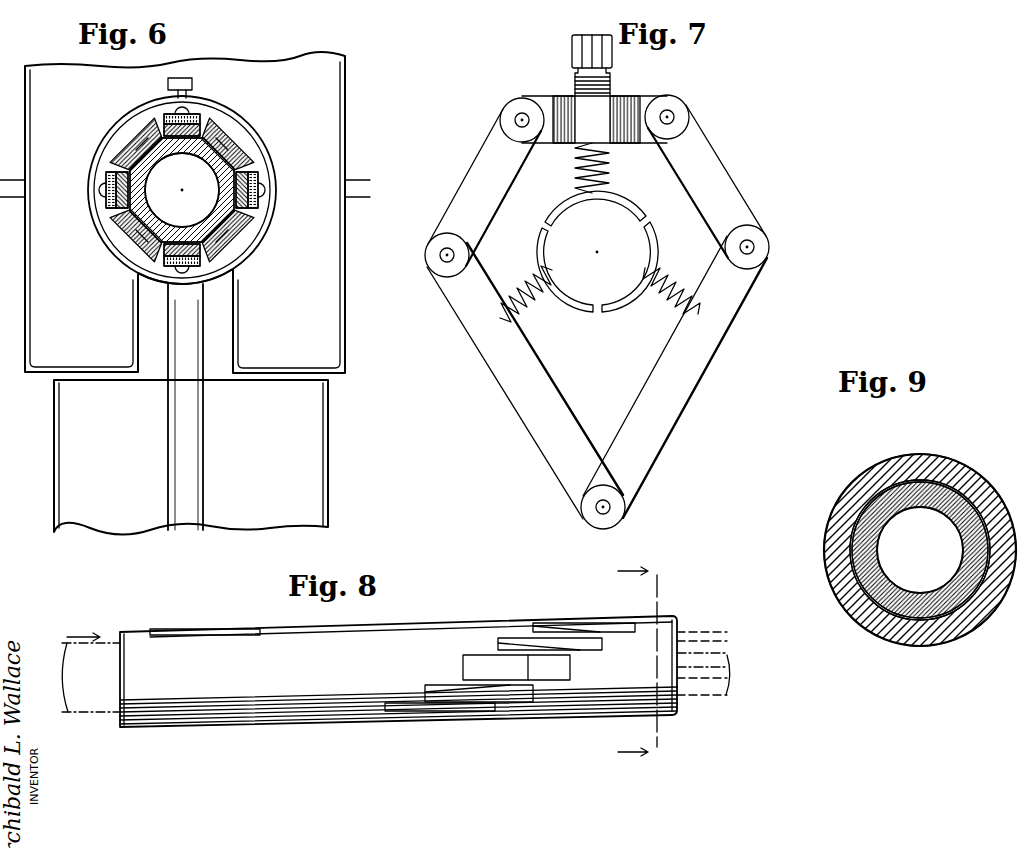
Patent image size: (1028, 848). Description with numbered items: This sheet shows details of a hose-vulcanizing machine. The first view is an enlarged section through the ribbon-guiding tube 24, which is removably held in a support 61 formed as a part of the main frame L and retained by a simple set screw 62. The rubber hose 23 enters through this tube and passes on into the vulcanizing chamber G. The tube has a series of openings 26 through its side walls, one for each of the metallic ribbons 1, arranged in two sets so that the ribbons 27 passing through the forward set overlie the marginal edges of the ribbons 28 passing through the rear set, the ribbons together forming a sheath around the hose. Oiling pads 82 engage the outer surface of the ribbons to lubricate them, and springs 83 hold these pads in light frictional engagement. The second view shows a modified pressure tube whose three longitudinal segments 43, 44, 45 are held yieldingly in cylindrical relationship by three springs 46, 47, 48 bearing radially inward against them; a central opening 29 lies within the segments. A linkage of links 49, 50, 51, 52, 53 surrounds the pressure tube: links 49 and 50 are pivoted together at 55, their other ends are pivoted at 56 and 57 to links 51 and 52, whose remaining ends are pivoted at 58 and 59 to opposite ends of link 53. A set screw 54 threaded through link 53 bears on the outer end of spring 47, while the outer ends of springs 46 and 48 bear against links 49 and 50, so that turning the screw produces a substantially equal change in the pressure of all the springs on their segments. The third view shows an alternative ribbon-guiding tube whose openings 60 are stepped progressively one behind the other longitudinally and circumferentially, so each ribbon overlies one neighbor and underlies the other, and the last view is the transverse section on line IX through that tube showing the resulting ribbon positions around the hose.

In FIG. 6, the vulcanizing chamber G is at (185, 212).
In FIG. 6, the main frame L is at (318, 396).
In FIG. 6, the ribbons 1 is at (112, 198).
In FIG. 6, the rubber hose 23 is at (160, 160).
In FIG. 6, the ribbon-guiding tube 24 is at (246, 174).
In FIG. 6, the openings 26 is at (165, 258).
In FIG. 6, the ribbons of forward set 27 is at (170, 134).
In FIG. 6, the ribbons of rear set 28 is at (226, 134).
In FIG. 6, the oiling pads 82 is at (208, 134).
In FIG. 6, the springs 83 is at (236, 148).
In FIG. 6, the support 61 is at (268, 228).
In FIG. 6, the set screw 62 is at (192, 80).
In FIG. 7, the opening 29 is at (597, 231).
In FIG. 7, the pressure tube segment 43 is at (538, 247).
In FIG. 7, the pressure tube segment 44 is at (638, 216).
In FIG. 7, the pressure tube segment 45 is at (627, 308).
In FIG. 7, the spring 46 is at (545, 306).
In FIG. 7, the spring 47 is at (612, 182).
In FIG. 7, the spring 48 is at (672, 286).
In FIG. 7, the link 49 is at (482, 345).
In FIG. 7, the link 50 is at (704, 370).
In FIG. 7, the link 51 is at (482, 170).
In FIG. 7, the link 52 is at (722, 168).
In FIG. 7, the link 53 is at (640, 104).
In FIG. 7, the set screw 54 is at (612, 88).
In FIG. 7, the pivot connection 55 is at (606, 512).
In FIG. 7, the pivot connection 56 is at (442, 258).
In FIG. 7, the pivot connection 57 is at (754, 247).
In FIG. 7, the pivot connection 58 is at (522, 113).
In FIG. 7, the pivot connection 59 is at (674, 116).
In FIG. 8, the openings 60 is at (465, 706).
In FIG. 8, the section line IX— IX is at (650, 658).